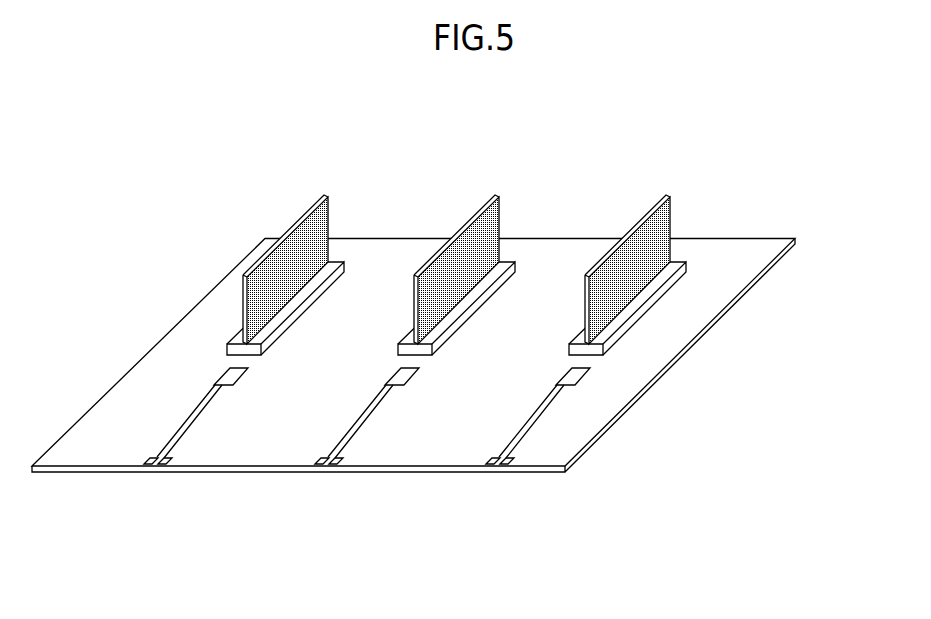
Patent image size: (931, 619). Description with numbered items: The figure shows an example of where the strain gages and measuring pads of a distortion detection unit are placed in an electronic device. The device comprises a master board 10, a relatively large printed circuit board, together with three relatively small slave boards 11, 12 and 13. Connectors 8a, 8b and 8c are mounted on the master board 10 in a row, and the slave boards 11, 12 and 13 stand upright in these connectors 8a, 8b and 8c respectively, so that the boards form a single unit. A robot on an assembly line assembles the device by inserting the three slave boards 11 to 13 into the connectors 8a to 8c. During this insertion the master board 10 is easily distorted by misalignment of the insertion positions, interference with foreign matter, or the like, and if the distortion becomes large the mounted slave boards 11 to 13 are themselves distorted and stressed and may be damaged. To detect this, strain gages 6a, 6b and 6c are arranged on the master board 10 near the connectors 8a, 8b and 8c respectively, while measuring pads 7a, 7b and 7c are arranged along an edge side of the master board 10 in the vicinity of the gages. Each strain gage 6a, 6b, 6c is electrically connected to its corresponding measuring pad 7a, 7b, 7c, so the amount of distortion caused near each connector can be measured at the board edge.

The master board 10 is at (703, 330).
The slave board 11 is at (287, 232).
The slave board 12 is at (458, 232).
The slave board 13 is at (648, 205).
The connector 8a is at (342, 268).
The connector 8b is at (513, 268).
The connector 8c is at (687, 273).
The strain gage 6a is at (244, 374).
The strain gage 6b is at (405, 385).
The strain gage 6c is at (575, 387).
The measuring pad 7a is at (141, 468).
The measuring pad 7b is at (318, 467).
The measuring pad 7c is at (487, 467).